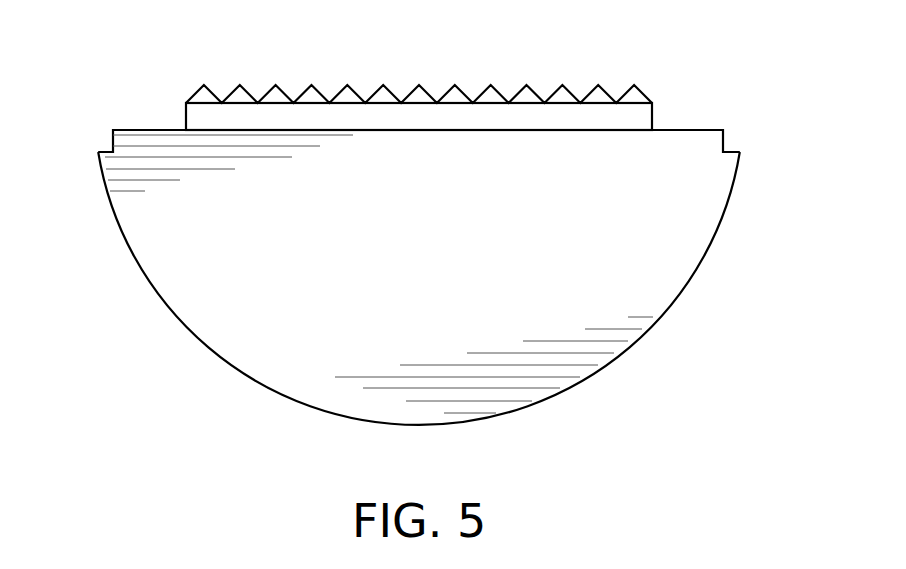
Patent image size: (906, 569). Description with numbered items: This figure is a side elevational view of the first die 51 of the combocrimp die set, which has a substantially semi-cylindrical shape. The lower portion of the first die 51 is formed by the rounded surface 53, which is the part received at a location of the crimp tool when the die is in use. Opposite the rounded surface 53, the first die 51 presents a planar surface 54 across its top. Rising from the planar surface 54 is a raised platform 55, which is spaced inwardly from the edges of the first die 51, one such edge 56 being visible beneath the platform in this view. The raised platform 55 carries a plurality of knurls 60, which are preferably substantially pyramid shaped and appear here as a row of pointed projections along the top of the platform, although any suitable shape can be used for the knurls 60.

The first die 51 is at (411, 274).
The rounded surface 53 is at (499, 415).
The planar surface 54 is at (152, 130).
The raised platform 55 is at (652, 120).
The edge 56 is at (425, 131).
The knurls 60 is at (497, 92).